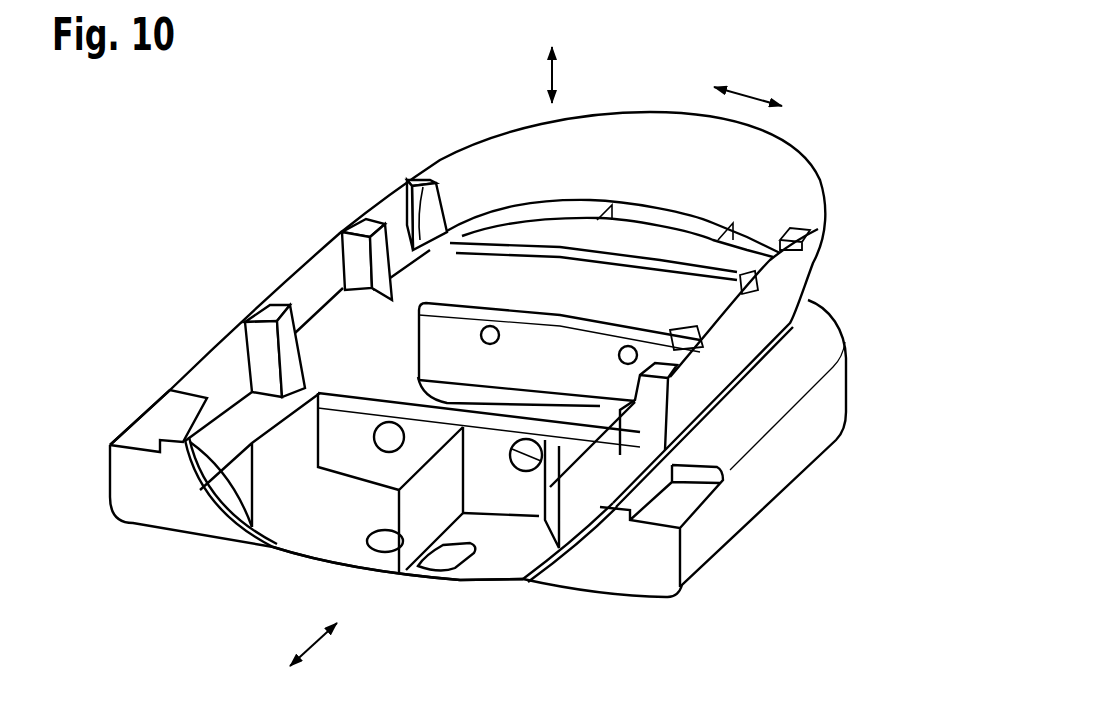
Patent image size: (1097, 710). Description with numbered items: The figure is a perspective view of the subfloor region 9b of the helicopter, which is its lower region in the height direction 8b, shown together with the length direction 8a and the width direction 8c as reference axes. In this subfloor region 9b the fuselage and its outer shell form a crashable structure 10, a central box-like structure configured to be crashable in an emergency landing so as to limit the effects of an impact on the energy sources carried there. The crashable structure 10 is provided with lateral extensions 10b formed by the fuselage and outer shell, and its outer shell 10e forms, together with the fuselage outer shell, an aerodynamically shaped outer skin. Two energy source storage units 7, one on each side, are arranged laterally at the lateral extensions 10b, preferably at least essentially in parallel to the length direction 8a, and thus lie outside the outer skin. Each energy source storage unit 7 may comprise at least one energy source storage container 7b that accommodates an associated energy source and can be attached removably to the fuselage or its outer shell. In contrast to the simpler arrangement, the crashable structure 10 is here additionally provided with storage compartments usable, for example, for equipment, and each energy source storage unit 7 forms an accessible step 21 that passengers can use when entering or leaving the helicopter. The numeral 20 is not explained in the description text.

The energy source storage unit 7 is at (133, 535).
The energy source storage container 7b is at (213, 372).
The subfloor region 9b is at (283, 172).
The partition plate / contact surface 20 is at (594, 307).
The accessible step 21 is at (137, 408).
The crashable structure 10 is at (403, 590).
The lateral extension 10b is at (200, 490).
The outer shell 10e is at (487, 584).
The length direction 8a is at (312, 640).
The height direction 8b is at (546, 70).
The width direction 8c is at (752, 86).